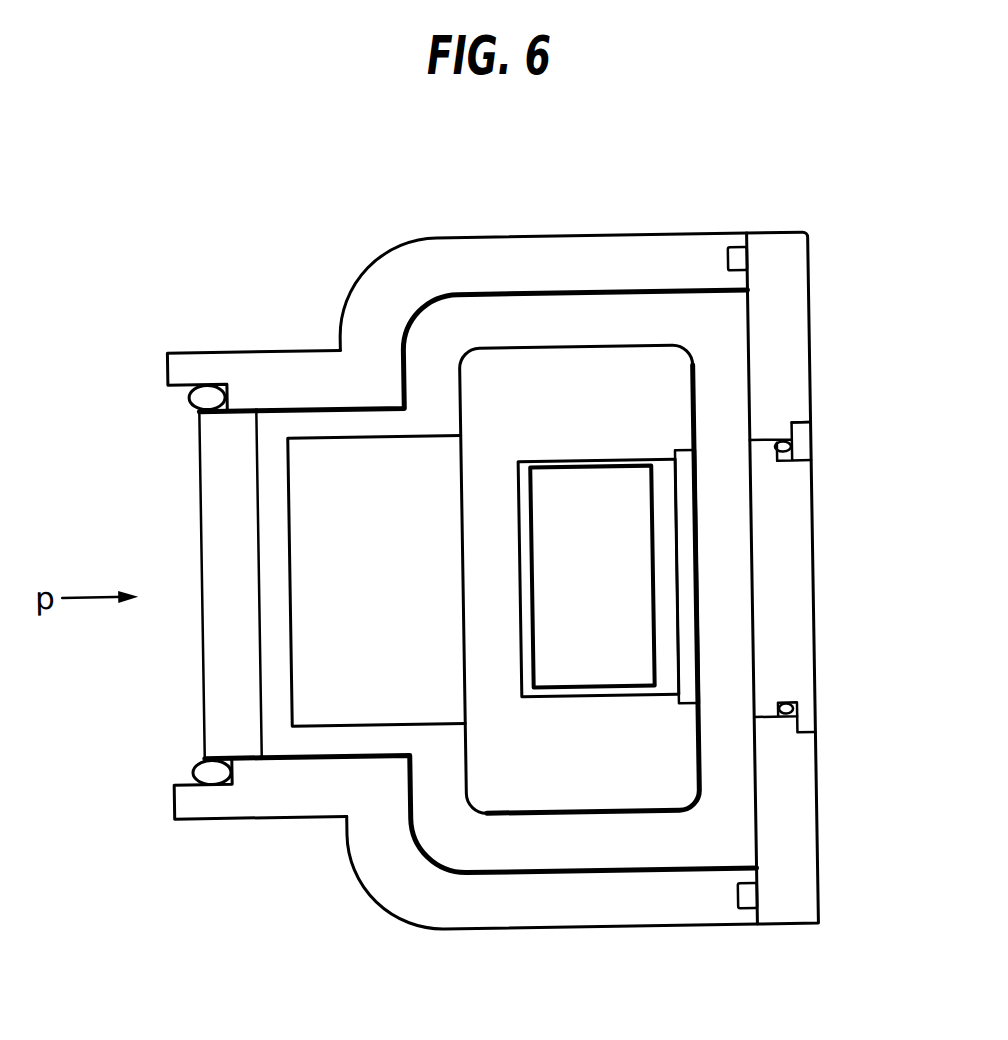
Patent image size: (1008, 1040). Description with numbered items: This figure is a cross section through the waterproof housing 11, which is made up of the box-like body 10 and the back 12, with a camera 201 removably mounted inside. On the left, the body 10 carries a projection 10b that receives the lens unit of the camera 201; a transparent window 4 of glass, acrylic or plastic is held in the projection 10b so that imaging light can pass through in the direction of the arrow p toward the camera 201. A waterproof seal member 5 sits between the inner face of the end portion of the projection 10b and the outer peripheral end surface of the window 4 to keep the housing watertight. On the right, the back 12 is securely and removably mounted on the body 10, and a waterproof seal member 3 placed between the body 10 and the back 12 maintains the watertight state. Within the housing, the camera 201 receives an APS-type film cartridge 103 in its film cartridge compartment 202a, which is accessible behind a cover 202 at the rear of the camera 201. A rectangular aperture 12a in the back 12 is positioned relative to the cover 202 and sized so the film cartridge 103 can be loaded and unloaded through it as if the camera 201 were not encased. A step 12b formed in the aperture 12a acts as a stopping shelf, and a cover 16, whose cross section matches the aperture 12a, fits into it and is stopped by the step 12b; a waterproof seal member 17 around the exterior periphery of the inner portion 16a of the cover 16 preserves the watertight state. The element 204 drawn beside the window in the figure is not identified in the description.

The screw 3 is at (738, 253).
The sleeve 4 is at (212, 474).
The O-ring 5 is at (203, 390).
The housing 10 is at (608, 258).
The flange portion of housing 10b is at (281, 369).
The electromagnetic assembly 11 is at (460, 539).
The cover plate 12 is at (792, 295).
The O-ring 12a is at (763, 717).
The groove 12b is at (815, 730).
The plate member 16 is at (794, 540).
The projection 16a is at (762, 446).
The O-ring 17 is at (782, 461).
The magnetic core 103 is at (627, 614).
The bobbin 201 is at (664, 395).
The coil 202 is at (693, 575).
The coil flange 202a is at (671, 690).
The magnetic plate 204 is at (321, 687).